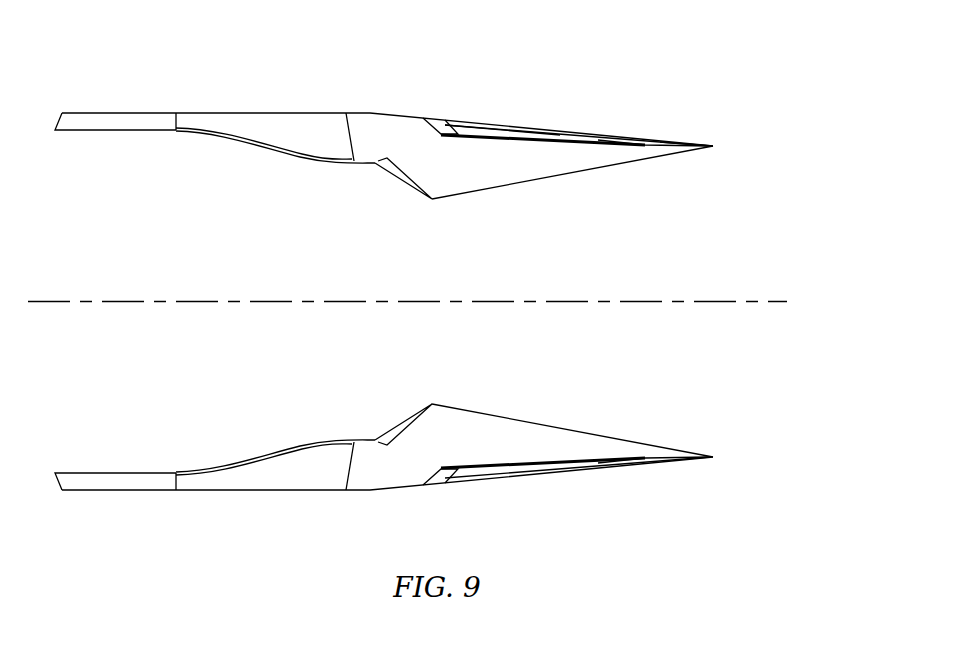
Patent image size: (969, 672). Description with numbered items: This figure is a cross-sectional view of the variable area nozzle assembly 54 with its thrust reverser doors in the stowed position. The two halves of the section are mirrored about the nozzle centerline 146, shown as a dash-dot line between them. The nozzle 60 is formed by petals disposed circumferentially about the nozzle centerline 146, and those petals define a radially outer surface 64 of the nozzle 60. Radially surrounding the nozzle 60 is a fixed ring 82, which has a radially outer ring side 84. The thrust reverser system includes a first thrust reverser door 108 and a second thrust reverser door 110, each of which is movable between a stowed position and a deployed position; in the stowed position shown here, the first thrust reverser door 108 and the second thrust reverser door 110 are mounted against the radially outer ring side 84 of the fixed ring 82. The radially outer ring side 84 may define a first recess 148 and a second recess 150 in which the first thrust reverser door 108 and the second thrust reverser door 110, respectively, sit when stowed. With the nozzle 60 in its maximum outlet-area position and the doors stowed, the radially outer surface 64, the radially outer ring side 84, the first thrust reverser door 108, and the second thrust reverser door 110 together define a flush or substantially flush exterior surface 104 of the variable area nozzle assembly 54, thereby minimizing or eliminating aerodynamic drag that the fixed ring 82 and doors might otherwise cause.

The variable area nozzle assembly 54 is at (422, 127).
The nozzle 60 is at (441, 471).
The radially outer surface 64 is at (680, 142).
The fixed ring 82 is at (602, 151).
The radially outer ring side 84 is at (485, 123).
The exterior surface 104 is at (420, 103).
The first thrust reverser door 108 is at (542, 118).
The second thrust reverser door 110 is at (543, 488).
The nozzle centerline 146 is at (762, 302).
The first recess 148 is at (542, 146).
The second recess 150 is at (543, 461).